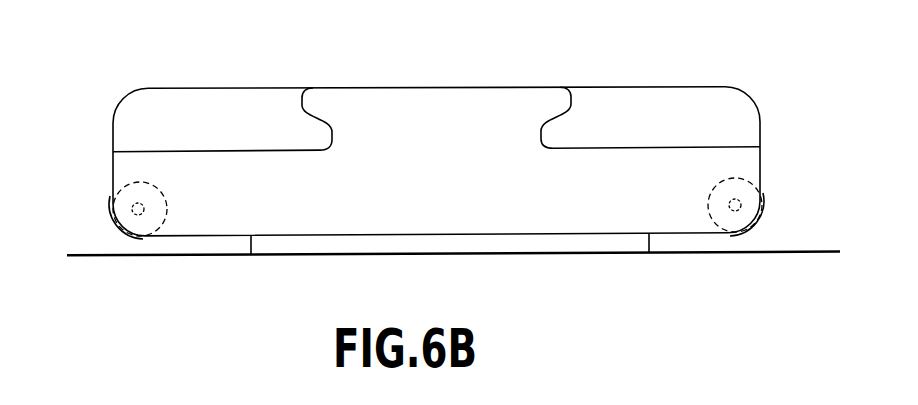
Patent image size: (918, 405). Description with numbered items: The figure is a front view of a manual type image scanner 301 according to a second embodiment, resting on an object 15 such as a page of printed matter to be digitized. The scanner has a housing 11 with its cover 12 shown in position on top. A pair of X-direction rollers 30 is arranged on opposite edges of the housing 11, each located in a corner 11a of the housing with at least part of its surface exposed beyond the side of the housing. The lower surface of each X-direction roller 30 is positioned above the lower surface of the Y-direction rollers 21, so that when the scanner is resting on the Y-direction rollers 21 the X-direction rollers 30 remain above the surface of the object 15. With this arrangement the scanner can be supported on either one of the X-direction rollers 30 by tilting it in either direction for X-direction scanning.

The manual type image scanner 301 is at (375, 56).
The cover 12 is at (488, 100).
The housing 11 is at (705, 163).
The corner 11a is at (137, 190).
The X-direction roller 30 is at (110, 213).
The Y-direction roller 21 is at (292, 245).
The object 15 is at (730, 253).